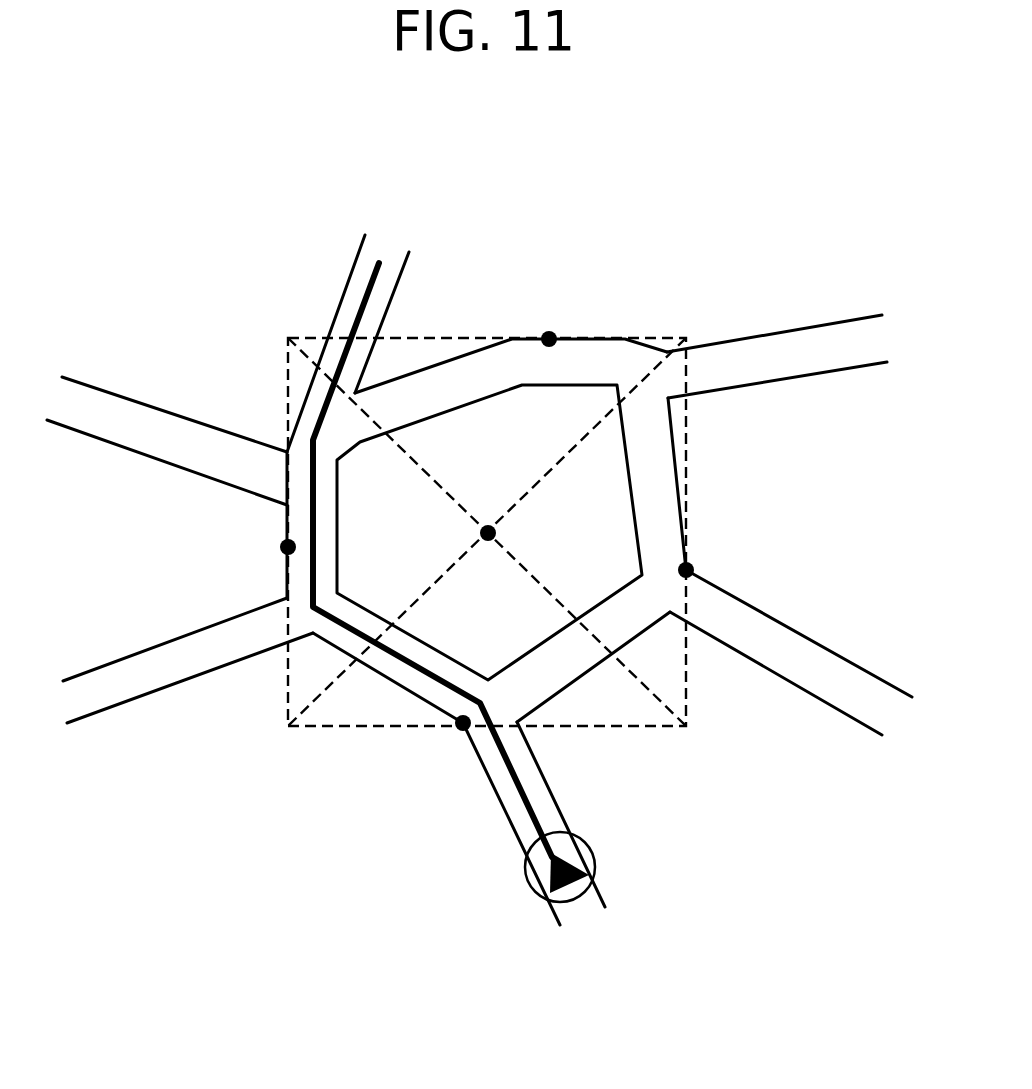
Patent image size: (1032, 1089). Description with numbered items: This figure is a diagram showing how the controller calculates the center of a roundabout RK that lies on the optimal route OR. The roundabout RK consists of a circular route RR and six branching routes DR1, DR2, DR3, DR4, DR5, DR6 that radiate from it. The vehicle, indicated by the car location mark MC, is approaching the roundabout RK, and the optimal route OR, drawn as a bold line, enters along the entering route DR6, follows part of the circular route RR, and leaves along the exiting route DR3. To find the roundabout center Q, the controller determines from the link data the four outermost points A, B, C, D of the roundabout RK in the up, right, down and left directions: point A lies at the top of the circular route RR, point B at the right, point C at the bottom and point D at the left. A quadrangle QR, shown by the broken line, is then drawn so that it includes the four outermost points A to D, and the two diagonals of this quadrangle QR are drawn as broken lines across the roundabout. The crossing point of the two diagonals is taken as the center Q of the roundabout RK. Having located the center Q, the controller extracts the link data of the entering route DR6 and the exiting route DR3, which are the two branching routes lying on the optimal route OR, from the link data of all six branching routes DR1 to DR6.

The branching route DR1 is at (830, 662).
The branching route DR2 is at (778, 345).
The exiting route DR3 is at (343, 315).
The branching route DR4 is at (132, 438).
The branching route DR5 is at (162, 673).
The entering route DR6 is at (545, 805).
The circular route RR is at (468, 370).
The roundabout RK is at (278, 403).
The quadrangle QR is at (290, 727).
The optimal route OR is at (423, 675).
The car location mark MC is at (518, 872).
The outermost point A is at (550, 319).
The outermost point B is at (703, 557).
The outermost point C is at (455, 740).
The outermost point D is at (273, 548).
The center Q is at (469, 530).